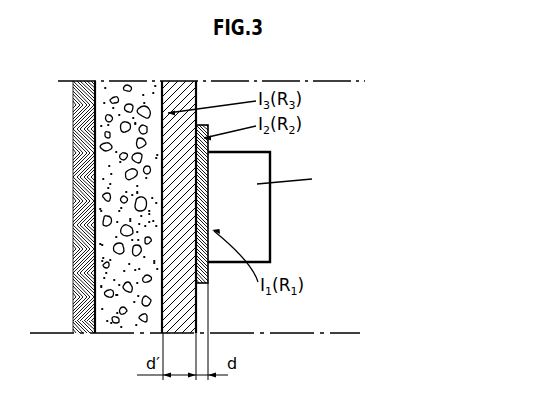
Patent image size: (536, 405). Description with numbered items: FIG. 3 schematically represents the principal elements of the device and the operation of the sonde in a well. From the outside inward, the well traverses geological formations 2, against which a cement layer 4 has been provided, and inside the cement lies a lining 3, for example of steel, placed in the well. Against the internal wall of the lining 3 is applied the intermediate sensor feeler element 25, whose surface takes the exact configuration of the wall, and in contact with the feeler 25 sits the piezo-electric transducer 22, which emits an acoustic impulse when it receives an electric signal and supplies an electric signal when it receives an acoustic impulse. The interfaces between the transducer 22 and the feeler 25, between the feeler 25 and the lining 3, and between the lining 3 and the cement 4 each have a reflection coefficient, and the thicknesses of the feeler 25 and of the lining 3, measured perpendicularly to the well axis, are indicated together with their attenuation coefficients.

The geological formations 2 is at (79, 81).
The cement layer 4 is at (131, 81).
The lining 3 is at (179, 81).
The transducer 22 is at (258, 221).
The feeler 25 is at (198, 283).